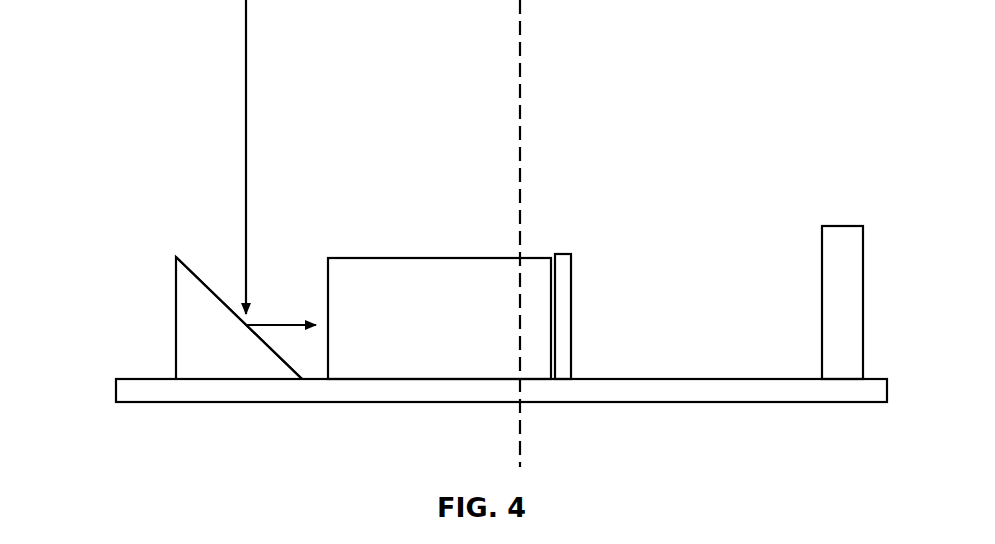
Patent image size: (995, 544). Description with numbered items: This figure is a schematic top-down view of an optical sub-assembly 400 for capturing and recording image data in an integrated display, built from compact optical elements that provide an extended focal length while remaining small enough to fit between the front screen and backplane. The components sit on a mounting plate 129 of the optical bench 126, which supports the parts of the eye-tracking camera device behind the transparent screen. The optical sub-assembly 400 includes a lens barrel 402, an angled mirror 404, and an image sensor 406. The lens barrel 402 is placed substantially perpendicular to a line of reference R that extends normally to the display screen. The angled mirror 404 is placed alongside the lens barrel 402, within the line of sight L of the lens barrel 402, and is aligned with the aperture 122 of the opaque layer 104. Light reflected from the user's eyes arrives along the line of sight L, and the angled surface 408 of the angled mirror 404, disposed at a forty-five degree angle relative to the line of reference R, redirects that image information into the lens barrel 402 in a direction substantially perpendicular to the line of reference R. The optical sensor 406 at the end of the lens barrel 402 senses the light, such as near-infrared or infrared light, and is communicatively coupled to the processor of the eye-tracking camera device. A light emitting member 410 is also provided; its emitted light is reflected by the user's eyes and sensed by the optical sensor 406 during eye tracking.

The optical sub-assembly 400 is at (130, 429).
The mounting plate 129 is at (693, 403).
The angled mirror 404 is at (233, 343).
The angled surface 408 is at (197, 280).
The lens tube (lens barrel) 402 is at (452, 354).
The image sensor (optical sensor) 406 is at (572, 316).
The light emitting member 410 is at (843, 226).
The aperture 122 is at (175, 205).
The opaque layer 104 is at (112, 201).
The optical bench 126 is at (709, 201).
The line of sight L is at (247, 148).
The line of reference R is at (520, 112).